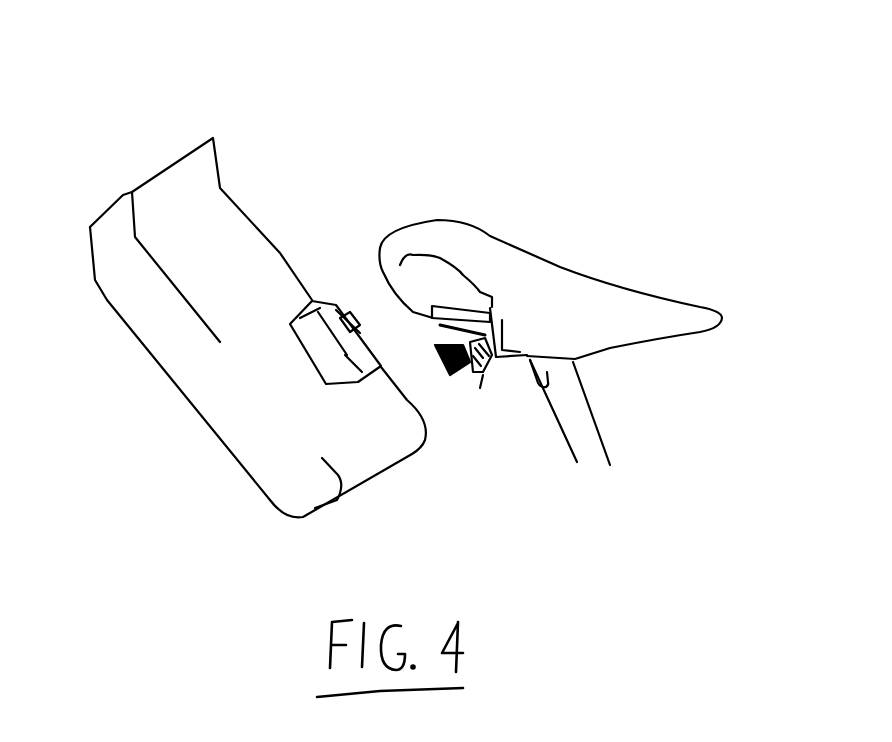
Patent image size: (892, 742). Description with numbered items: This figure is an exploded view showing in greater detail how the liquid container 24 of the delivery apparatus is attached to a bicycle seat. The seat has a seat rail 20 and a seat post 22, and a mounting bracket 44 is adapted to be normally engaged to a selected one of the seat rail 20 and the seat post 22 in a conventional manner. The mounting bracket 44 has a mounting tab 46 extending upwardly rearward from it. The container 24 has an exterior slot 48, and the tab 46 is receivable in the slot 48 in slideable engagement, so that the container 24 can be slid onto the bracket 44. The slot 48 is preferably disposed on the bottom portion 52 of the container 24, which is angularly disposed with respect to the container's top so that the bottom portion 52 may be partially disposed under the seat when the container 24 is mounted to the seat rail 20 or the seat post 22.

The seat rail 20 is at (512, 362).
The seat post 22 is at (597, 423).
The container 24 is at (237, 245).
The mounting bracket 44 is at (445, 322).
The mounting tab 46 is at (480, 386).
The exterior slot 48 is at (322, 318).
The bottom portion 52 is at (352, 453).